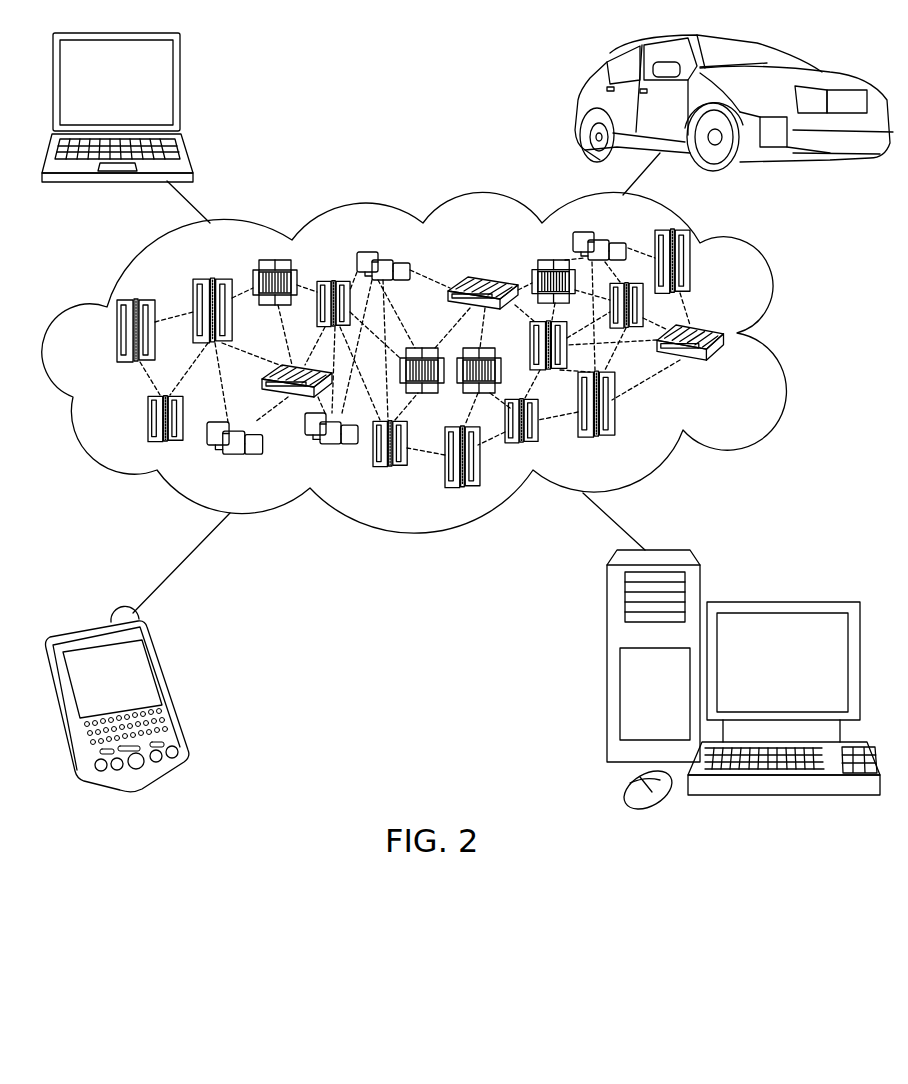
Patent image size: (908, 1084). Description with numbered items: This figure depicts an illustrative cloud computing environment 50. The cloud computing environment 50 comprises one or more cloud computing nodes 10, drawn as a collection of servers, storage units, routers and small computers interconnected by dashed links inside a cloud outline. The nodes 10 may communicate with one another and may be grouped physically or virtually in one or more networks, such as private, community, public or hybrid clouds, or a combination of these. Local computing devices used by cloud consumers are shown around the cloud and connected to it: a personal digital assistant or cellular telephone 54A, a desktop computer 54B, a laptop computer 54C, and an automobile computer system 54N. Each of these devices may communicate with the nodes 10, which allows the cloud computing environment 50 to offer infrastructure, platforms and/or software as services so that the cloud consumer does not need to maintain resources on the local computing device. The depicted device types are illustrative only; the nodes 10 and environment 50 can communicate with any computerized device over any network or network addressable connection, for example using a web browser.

The cloud computing node 10 is at (730, 369).
The cloud computing environment 50 is at (436, 362).
The personal digital assistant or cellular telephone 54A is at (172, 688).
The desktop computer 54B is at (781, 600).
The laptop computer 54C is at (182, 90).
The automobile computer system 54N is at (582, 102).